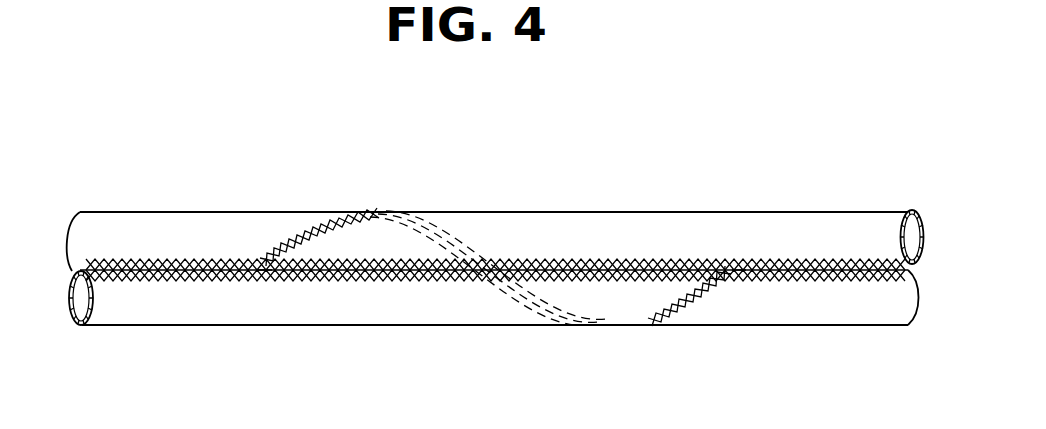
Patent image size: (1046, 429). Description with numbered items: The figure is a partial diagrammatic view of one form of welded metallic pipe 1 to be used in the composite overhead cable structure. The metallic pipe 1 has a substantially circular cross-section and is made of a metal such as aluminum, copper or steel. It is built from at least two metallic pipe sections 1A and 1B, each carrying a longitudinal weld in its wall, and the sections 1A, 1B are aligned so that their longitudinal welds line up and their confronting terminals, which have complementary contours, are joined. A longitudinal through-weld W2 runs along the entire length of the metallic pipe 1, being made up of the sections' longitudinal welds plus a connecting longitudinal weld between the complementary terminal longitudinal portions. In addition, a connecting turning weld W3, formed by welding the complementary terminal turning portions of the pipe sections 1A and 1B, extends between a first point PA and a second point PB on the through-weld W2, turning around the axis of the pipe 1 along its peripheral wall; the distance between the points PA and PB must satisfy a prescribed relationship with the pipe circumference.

The metallic pipe 1 is at (602, 210).
The metallic pipe section 1A is at (141, 232).
The metallic pipe section 1B is at (860, 305).
The connecting turning weld W3 is at (297, 238).
The longitudinal through-weld W2 is at (462, 275).
The first point PA is at (265, 283).
The second point PB is at (738, 262).